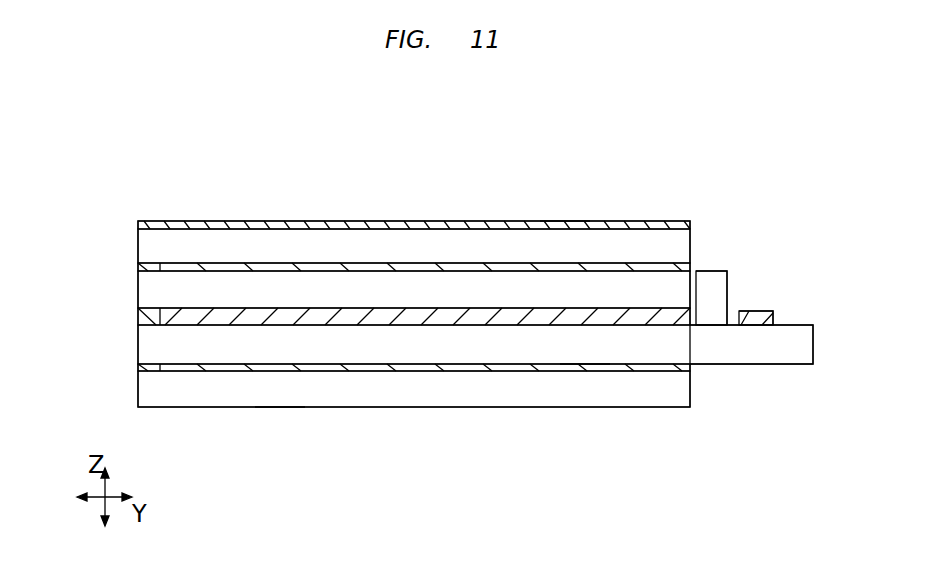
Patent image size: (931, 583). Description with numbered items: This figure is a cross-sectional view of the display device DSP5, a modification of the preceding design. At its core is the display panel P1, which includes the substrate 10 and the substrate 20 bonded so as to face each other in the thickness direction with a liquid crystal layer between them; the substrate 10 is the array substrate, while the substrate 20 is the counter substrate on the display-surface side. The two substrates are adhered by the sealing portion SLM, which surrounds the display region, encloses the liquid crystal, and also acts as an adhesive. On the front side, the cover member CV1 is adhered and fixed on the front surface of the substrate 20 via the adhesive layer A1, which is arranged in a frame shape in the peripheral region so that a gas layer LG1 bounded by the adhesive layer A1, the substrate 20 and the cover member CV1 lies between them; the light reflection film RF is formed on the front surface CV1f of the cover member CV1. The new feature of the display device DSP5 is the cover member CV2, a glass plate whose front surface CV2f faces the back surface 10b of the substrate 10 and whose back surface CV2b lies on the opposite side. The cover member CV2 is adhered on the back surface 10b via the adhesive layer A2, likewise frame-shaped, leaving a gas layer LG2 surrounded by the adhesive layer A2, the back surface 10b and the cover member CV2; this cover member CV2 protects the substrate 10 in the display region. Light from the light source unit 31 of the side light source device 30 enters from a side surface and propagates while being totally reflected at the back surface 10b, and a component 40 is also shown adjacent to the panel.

The display device DSP5 is at (284, 137).
The light reflection film RF is at (148, 222).
The cover member CV1 is at (146, 241).
The front surface CV1f is at (563, 221).
The adhesive layer A1 is at (147, 268).
The gas layer LG1 is at (388, 266).
The substrate 20 is at (152, 288).
The sealing portion SLM is at (146, 316).
The substrate 10 is at (152, 344).
The back surface 10b is at (440, 367).
The adhesive layer A2 is at (147, 368).
The gas layer LG2 is at (535, 367).
The cover member CV2 is at (150, 391).
The back surface CV2b is at (280, 408).
The front surface CV2f is at (580, 363).
The light source unit 31 is at (748, 254).
The side light source device 30 is at (717, 290).
The connector / flexible wiring board 40 is at (768, 311).
The display panel P1 is at (823, 271).